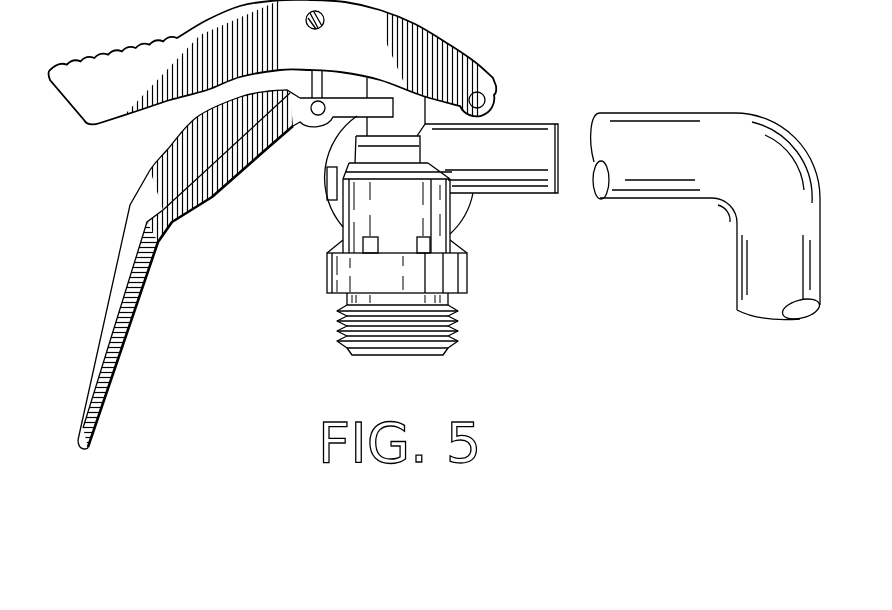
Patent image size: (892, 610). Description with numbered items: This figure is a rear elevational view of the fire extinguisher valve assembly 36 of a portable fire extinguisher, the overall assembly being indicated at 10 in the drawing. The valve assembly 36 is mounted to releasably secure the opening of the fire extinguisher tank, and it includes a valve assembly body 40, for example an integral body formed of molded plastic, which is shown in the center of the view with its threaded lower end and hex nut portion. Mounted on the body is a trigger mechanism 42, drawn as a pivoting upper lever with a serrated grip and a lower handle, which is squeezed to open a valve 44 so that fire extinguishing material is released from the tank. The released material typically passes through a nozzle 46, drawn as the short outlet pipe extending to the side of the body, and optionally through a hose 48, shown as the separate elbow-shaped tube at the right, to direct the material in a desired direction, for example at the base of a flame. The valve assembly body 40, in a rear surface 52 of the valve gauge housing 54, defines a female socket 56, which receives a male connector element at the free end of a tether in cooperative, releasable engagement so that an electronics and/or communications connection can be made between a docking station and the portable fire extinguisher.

The sprayer valve assembly 10 is at (553, 339).
The fire extinguisher valve assembly 36 is at (250, 345).
The valve assembly body 40 is at (347, 272).
The trigger mechanism 42 is at (374, 53).
The valve 44 is at (377, 150).
The nozzle 46 is at (500, 164).
The hose 48 is at (711, 166).
The rear surface 52 is at (335, 213).
The valve gauge housing 54 is at (460, 205).
The female socket 56 is at (326, 182).